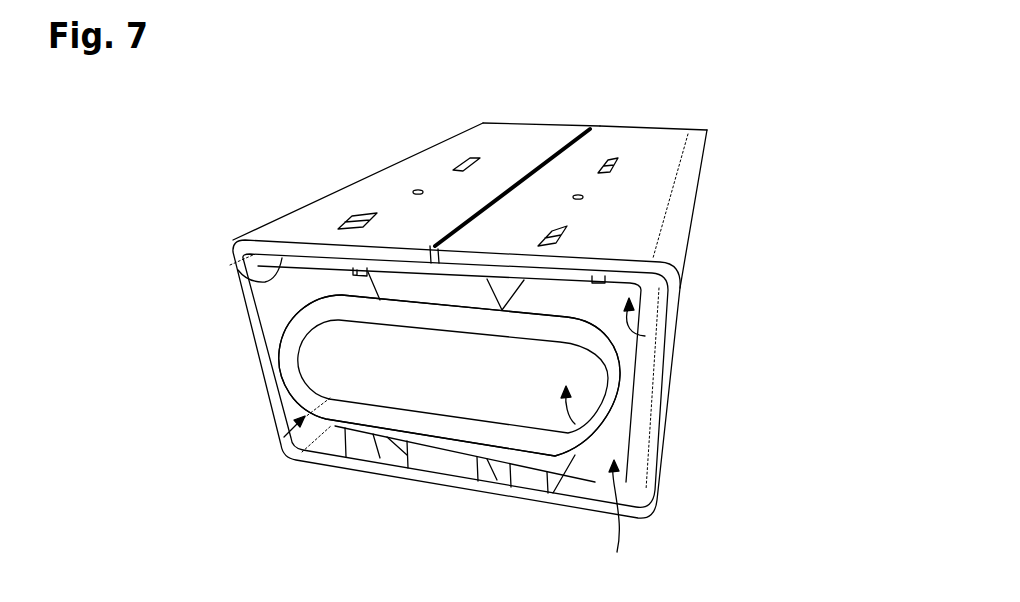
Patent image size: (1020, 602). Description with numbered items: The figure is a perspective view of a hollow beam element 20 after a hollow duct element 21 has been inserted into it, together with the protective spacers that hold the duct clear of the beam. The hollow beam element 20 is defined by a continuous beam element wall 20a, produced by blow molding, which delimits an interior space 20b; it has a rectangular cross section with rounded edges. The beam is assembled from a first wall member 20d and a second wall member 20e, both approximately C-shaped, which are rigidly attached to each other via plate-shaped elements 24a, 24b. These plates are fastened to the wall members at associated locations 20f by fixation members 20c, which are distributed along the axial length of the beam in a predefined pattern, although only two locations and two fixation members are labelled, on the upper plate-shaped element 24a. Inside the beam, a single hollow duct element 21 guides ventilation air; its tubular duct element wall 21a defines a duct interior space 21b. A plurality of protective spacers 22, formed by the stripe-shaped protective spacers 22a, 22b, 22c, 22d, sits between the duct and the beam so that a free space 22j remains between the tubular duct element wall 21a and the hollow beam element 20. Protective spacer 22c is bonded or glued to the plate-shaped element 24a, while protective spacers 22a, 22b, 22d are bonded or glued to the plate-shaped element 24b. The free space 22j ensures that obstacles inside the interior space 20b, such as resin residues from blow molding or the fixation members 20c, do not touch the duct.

The hollow beam element 20 is at (220, 233).
The beam element wall 20a is at (675, 302).
The interior space 20b is at (645, 336).
The fixation members 20c is at (357, 270).
The first wall member 20d is at (427, 173).
The second wall member 20e is at (653, 143).
The associated locations 20f is at (352, 220).
The hollow duct element 21 is at (283, 430).
The tubular duct element wall 21a is at (297, 380).
The duct interior space 21b is at (575, 424).
The plurality of protective spacers 22 is at (385, 466).
The protective spacer 22a is at (531, 476).
The protective spacer 22b is at (358, 446).
The protective spacer 22c is at (405, 288).
The protective spacer 22d is at (438, 456).
The free space 22j is at (626, 524).
The plate-shaped element 24a is at (281, 262).
The plate-shaped element 24b is at (495, 485).